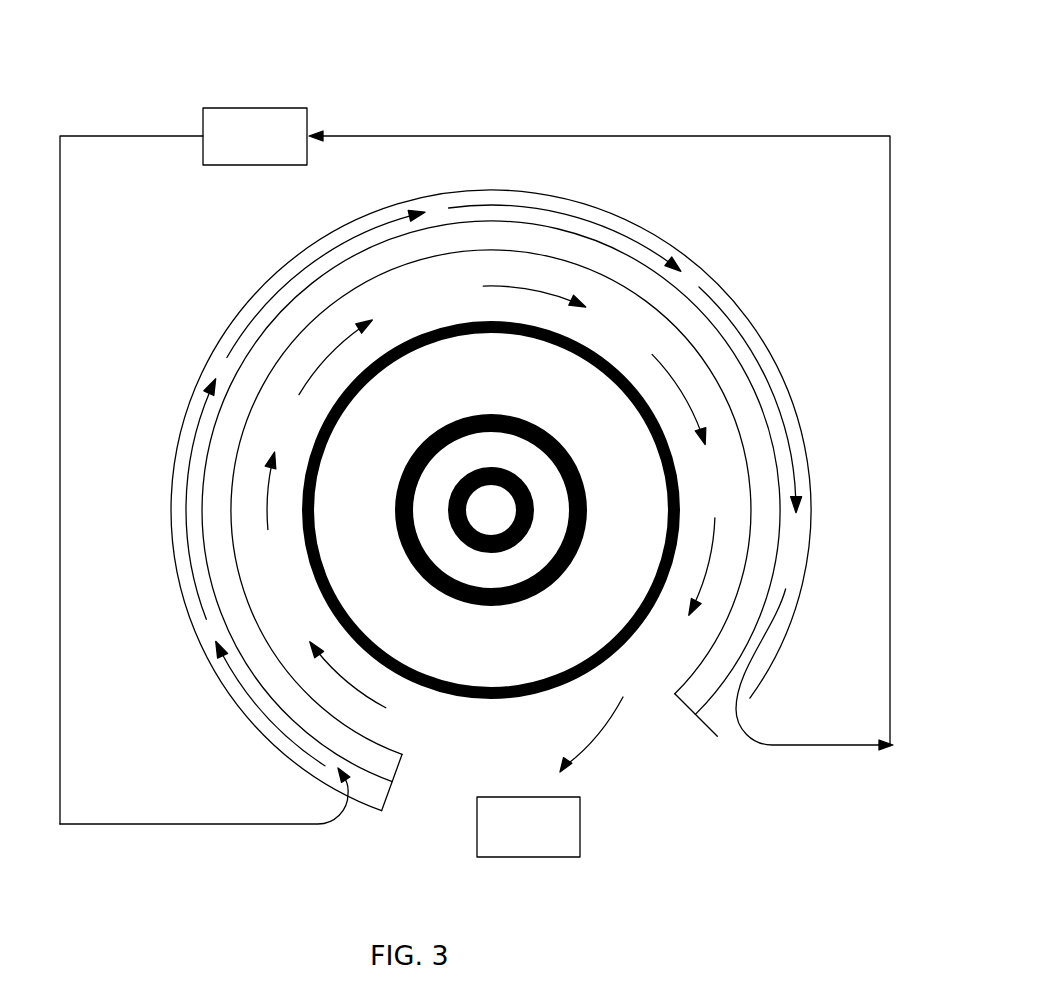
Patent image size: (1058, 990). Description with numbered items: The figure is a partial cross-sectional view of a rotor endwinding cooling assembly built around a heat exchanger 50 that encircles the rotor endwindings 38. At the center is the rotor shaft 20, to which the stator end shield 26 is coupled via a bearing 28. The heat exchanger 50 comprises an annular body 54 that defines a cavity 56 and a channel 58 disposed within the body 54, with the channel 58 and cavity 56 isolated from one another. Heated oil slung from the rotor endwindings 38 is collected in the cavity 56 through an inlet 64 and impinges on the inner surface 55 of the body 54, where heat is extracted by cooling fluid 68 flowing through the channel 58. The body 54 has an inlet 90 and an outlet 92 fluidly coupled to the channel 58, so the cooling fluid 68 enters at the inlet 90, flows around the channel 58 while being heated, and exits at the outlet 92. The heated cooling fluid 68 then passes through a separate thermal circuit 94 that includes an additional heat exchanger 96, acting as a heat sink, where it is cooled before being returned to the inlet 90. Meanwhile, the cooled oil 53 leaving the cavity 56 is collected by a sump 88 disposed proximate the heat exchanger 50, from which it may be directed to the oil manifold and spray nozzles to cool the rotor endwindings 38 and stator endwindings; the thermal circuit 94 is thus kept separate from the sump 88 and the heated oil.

The rotor shaft 20 is at (540, 510).
The stator end shield 26 is at (493, 410).
The bearing 28 is at (437, 502).
The rotor endwindings 38 is at (620, 355).
The heat exchanger 50 is at (755, 226).
The cooled oil 53 is at (588, 730).
The body 54 is at (678, 240).
The inner surface 55 is at (747, 472).
The cavity 56 is at (720, 582).
The channel 58 is at (222, 368).
The inlet 64 is at (452, 841).
The cooling fluid 68 is at (185, 505).
The sump 88 is at (528, 827).
The inlet 90 is at (359, 812).
The outlet 92 is at (731, 728).
The thermal circuit 94 is at (847, 78).
The additional heat exchanger 96 is at (255, 136).